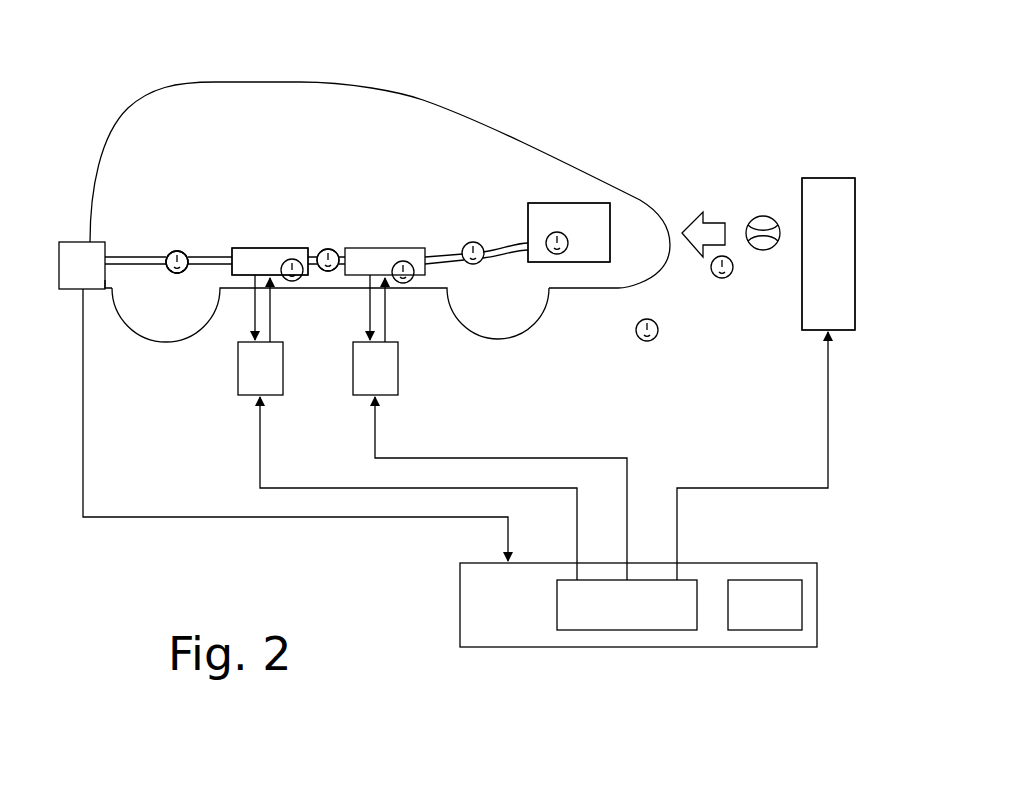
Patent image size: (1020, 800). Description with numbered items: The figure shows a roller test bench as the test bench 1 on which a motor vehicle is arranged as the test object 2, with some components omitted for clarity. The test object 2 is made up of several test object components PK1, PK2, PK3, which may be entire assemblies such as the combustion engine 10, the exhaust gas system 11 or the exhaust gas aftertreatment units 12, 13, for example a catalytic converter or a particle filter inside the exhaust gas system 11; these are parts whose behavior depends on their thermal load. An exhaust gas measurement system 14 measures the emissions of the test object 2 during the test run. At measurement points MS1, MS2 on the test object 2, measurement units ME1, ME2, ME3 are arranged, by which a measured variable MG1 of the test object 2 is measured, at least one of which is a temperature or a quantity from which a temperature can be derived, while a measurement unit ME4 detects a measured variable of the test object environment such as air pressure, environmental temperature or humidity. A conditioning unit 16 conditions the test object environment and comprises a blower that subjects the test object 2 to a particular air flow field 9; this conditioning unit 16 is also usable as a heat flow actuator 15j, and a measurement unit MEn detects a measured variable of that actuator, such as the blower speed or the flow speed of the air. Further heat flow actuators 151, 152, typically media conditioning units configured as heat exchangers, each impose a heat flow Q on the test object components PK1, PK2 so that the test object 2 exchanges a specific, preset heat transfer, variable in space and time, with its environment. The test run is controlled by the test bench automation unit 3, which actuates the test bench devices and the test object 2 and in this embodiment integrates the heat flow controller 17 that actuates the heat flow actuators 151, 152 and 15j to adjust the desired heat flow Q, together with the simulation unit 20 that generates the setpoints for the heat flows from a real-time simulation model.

The test bench 1 is at (487, 87).
The test object 2 is at (105, 148).
The test bench automation unit 3 is at (460, 593).
The air flow field 9 is at (713, 225).
The combustion engine 10 is at (572, 203).
The exhaust gas system 11 is at (507, 236).
The exhaust gas aftertreatment unit 12 is at (357, 220).
The exhaust gas aftertreatment unit 13 is at (298, 247).
The exhaust gas measurement system 14 is at (68, 292).
The heat flow actuator 15j is at (844, 177).
The heat flow actuator 151 is at (273, 383).
The heat flow actuator 152 is at (388, 383).
The conditioning unit 16 is at (840, 308).
The heat flow controller 17 is at (637, 617).
The simulation unit 20 is at (777, 616).
The measured variable MG1 is at (183, 279).
The measurement unit ME1 is at (177, 251).
The measurement unit ME2 is at (286, 259).
The measurement unit ME3 is at (560, 257).
The measurement unit ME4 is at (653, 342).
The measurement unit MEn is at (770, 215).
The measurement point MS1 is at (163, 252).
The measurement point MS2 is at (313, 250).
The test object component PK1 is at (245, 248).
The test object component PK2 is at (389, 248).
The test object component PK3 is at (598, 203).
The heat flow Q is at (320, 308).